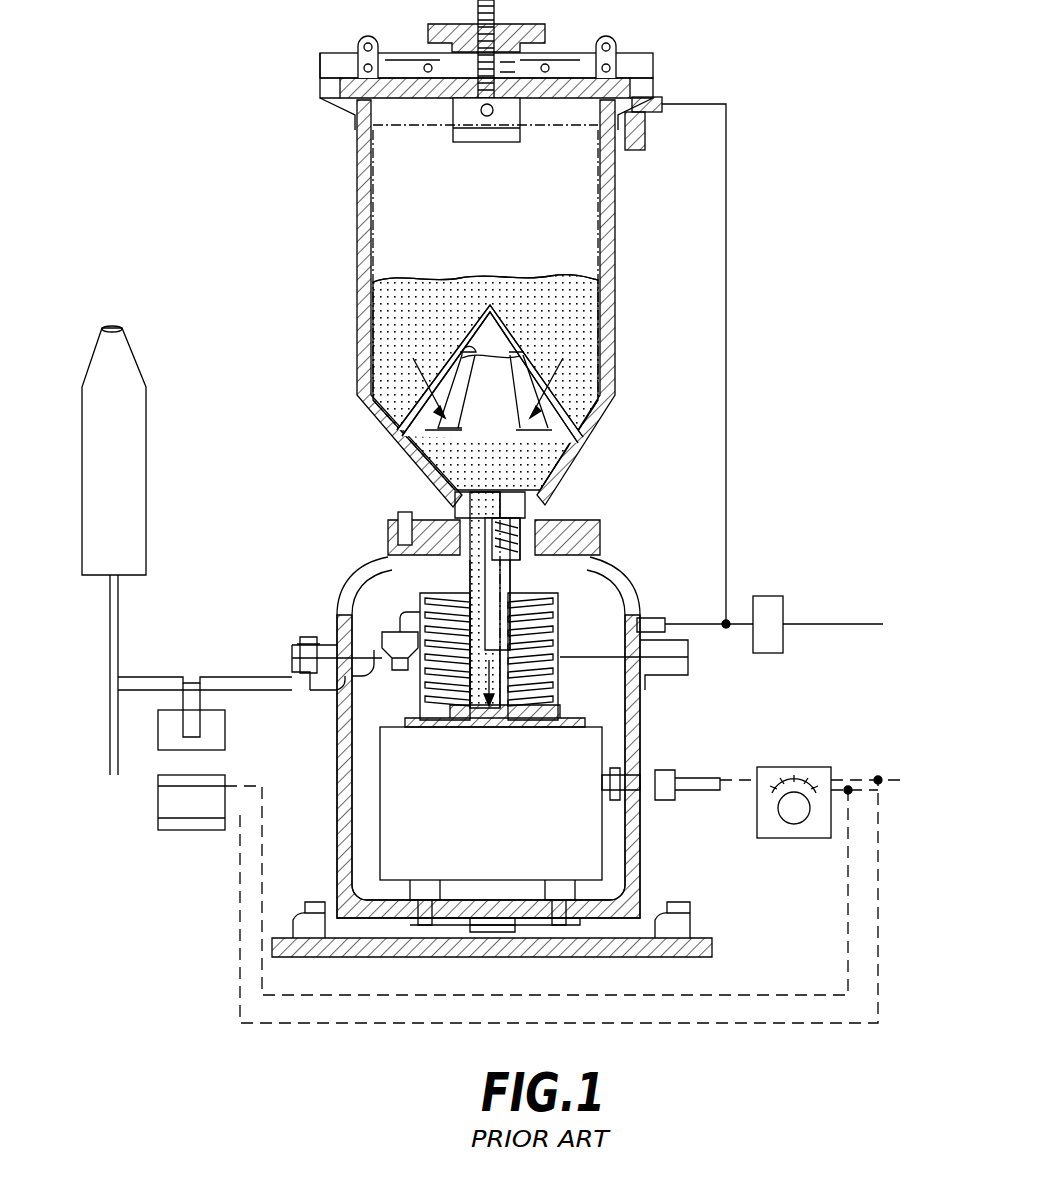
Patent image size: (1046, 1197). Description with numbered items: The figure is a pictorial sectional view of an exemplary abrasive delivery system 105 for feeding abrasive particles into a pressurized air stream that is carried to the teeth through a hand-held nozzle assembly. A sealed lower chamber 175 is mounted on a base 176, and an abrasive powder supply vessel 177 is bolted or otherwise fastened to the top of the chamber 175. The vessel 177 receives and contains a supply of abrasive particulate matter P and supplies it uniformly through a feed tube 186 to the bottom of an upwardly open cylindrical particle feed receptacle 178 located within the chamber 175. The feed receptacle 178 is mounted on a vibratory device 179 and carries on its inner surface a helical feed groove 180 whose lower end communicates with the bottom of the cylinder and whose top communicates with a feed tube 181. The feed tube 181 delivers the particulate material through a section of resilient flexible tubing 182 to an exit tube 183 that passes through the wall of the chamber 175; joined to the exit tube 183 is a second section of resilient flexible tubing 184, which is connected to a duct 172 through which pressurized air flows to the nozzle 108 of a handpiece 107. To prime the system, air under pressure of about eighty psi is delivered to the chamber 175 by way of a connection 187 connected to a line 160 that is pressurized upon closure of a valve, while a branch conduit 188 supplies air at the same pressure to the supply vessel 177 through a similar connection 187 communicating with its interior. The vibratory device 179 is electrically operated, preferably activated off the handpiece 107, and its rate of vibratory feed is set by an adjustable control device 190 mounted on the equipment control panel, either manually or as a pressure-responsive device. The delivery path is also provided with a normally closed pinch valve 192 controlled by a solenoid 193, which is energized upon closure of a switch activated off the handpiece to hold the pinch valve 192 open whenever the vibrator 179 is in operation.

The prior art thermal spray system 105 is at (740, 127).
The handpiece 107 is at (146, 445).
The nozzle 108 is at (115, 325).
The line 160 is at (818, 624).
The duct 172 is at (130, 610).
The sealed lower chamber 175 is at (645, 730).
The base 176 is at (712, 948).
The abrasive powder supply vessel 177 is at (357, 150).
The cylindrical particle feed receptacle 178 is at (560, 600).
The vibratory device 179 is at (628, 845).
The helical feed groove 180 is at (420, 600).
The feed tube 181 is at (380, 570).
The resilient flexible tubing 182 is at (345, 645).
The exit tube 183 is at (365, 690).
The second section of resilient flexible tubing 184 is at (150, 677).
The feed tube 186 is at (560, 555).
The connection 187 is at (660, 618).
The branch conduit 188 is at (726, 258).
The adjustable control device 190 is at (800, 767).
The pinch valve 192 is at (225, 742).
The solenoid 193 is at (158, 800).
The abrasive particulate matter P is at (600, 316).